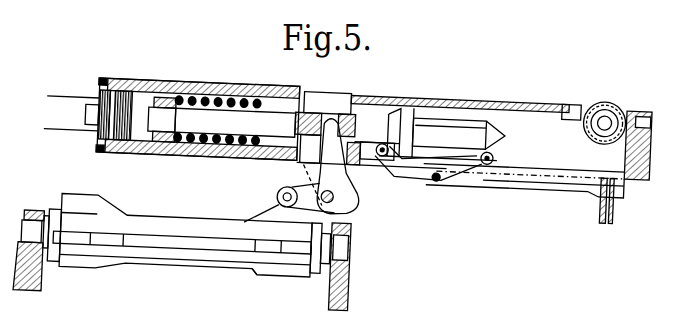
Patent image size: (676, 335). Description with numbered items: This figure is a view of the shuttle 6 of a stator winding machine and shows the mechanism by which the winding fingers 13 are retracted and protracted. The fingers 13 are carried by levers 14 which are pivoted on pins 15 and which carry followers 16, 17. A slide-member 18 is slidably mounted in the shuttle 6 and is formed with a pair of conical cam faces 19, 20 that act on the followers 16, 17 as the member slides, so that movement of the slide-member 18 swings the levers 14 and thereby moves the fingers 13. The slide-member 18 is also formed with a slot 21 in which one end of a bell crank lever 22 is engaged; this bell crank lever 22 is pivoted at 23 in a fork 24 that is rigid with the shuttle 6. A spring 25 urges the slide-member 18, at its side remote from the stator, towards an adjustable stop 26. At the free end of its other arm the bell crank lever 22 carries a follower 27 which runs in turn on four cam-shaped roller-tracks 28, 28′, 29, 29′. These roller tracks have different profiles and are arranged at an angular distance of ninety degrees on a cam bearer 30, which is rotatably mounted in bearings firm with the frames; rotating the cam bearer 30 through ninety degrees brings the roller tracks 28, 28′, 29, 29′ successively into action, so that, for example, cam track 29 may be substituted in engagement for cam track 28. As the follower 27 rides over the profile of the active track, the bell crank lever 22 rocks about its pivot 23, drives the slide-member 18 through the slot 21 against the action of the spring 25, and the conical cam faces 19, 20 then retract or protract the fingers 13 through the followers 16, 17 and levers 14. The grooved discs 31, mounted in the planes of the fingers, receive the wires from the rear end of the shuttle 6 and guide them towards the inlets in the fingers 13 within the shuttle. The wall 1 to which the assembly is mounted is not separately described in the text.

The wall 1 is at (43, 281).
The shuttle 6 is at (231, 90).
The fingers 13 is at (618, 214).
The levers 14 is at (510, 181).
The pins 15 is at (442, 182).
The follower 16 is at (386, 154).
The follower 17 is at (489, 162).
The slide-member 18 is at (221, 122).
The conical cam face 19 is at (412, 110).
The conical cam face 20 is at (506, 136).
The slot 21 is at (326, 115).
The bell crank lever 22 is at (344, 114).
The pivot 23 is at (343, 199).
The fork 24 is at (303, 172).
The spring 25 is at (205, 97).
The adjustable stop 26 is at (128, 110).
The follower 27 is at (286, 197).
The roller track 28 is at (280, 216).
The roller track 28′ is at (264, 249).
The roller track 29 is at (264, 270).
The roller track 29′ is at (289, 248).
The cam bearer 30 is at (193, 254).
The grooved discs 31 is at (604, 106).